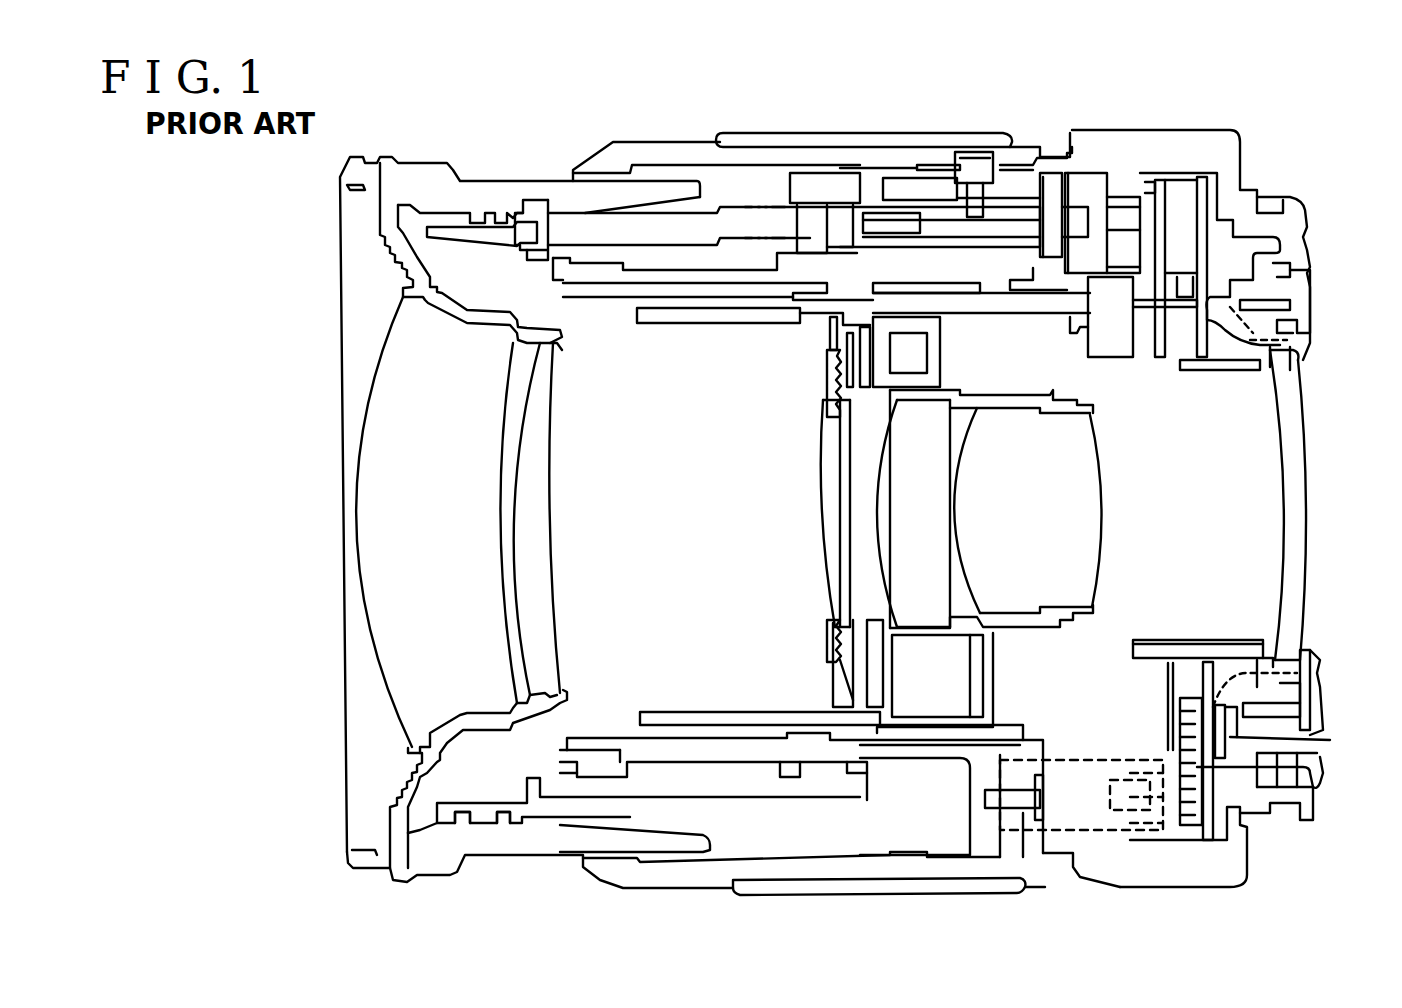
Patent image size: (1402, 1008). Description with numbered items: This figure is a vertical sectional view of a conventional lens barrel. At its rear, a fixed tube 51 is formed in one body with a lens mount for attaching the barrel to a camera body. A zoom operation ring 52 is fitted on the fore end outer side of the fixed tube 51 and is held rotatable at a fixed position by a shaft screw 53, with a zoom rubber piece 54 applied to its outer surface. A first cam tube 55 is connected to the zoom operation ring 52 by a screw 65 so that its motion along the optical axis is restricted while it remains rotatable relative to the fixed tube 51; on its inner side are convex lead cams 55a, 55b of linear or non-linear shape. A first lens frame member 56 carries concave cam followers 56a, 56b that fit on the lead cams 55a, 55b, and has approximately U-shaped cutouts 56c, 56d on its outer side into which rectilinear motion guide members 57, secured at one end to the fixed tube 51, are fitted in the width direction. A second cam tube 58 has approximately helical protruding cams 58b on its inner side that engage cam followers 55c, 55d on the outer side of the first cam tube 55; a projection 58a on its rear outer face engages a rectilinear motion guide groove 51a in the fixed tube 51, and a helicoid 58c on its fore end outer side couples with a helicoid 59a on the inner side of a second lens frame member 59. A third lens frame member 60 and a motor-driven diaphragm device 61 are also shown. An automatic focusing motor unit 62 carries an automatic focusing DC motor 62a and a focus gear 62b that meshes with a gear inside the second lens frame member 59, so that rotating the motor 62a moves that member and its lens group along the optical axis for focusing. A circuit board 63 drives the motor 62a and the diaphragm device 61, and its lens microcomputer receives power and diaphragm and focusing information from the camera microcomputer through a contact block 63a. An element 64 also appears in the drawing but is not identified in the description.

The fixed tube 51 is at (1228, 150).
The rectilinear motion guide groove 51a is at (940, 195).
The zoom operation ring 52 is at (1045, 145).
The shaft screw 53 is at (975, 150).
The zoom rubber piece 54 is at (855, 133).
The first cam tube 55 is at (895, 752).
The lead cam 55a is at (593, 747).
The lead cam 55b is at (593, 288).
The cam follower 55c is at (620, 757).
The cam follower 55d is at (790, 768).
The first lens frame member 56 is at (1050, 400).
The cam follower 56a is at (845, 735).
The cam follower 56b is at (845, 285).
The cutout 56c is at (987, 713).
The cutout 56d is at (918, 312).
The rectilinear motion guide member 57 is at (663, 313).
The second cam tube 58 is at (780, 783).
The projection 58a is at (805, 195).
The protruding cam 58b is at (640, 255).
The helicoid 58c is at (483, 823).
The second lens frame member 59 is at (432, 183).
The helicoid 59a is at (500, 822).
The third lens frame member 60 is at (830, 635).
The motor-driven diaphragm device 61 is at (957, 657).
The automatic focusing motor unit 62 is at (1130, 187).
The automatic focusing motor 62a is at (900, 175).
The focus gear 62b is at (707, 210).
The circuit board 63 is at (1210, 825).
The contact block 63a is at (1320, 778).
The rear lens holder 64 is at (1277, 280).
The screw 65 is at (980, 795).